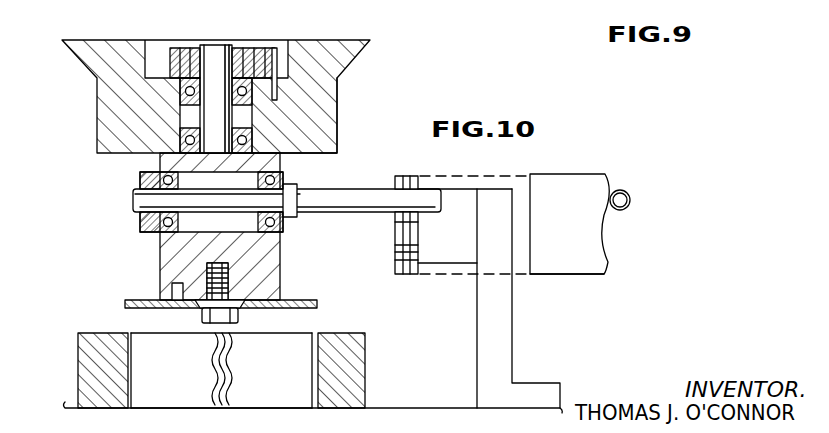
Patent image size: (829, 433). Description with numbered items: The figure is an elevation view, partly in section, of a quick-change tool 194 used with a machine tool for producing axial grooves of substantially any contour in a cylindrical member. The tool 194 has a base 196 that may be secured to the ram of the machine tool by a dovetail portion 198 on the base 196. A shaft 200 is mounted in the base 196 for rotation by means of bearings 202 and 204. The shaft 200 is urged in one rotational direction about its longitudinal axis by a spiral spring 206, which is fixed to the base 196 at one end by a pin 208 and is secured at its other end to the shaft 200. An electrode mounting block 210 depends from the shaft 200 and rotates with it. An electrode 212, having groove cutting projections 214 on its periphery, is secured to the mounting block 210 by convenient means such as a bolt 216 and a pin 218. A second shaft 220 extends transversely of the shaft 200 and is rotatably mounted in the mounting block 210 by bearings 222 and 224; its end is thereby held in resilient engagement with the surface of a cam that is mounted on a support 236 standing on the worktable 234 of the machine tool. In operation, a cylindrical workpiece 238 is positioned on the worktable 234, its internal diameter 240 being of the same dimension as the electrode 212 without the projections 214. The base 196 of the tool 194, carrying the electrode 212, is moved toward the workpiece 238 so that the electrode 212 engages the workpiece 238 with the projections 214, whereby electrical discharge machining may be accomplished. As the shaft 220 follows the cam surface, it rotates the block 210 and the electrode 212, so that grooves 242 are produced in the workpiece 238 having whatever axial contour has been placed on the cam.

The tool 194 is at (638, 139).
The base 196 is at (97, 105).
The dovetail portion 198 is at (343, 62).
The shaft 200 is at (220, 47).
The bearing 202 is at (185, 92).
The bearing 204 is at (184, 140).
The spiral spring 206 is at (250, 50).
The pin 208 is at (276, 92).
The electrode mounting block 210 is at (160, 258).
The electrode 212 is at (242, 316).
The groove cutting projections 214 is at (128, 300).
The bolt 216 is at (228, 282).
The pin 218 is at (177, 305).
The shaft 220 is at (133, 200).
The bearing 222 is at (145, 173).
The bearing 224 is at (283, 180).
The worktable 234 is at (445, 407).
The support 236 is at (512, 350).
The cylindrical workpiece 238 is at (78, 352).
The internal diameter 240 is at (320, 366).
The grooves 242 is at (215, 362).